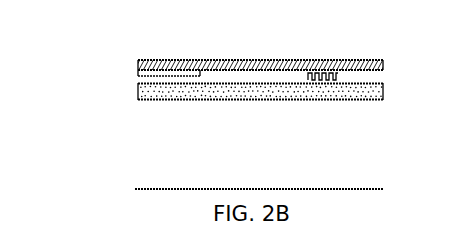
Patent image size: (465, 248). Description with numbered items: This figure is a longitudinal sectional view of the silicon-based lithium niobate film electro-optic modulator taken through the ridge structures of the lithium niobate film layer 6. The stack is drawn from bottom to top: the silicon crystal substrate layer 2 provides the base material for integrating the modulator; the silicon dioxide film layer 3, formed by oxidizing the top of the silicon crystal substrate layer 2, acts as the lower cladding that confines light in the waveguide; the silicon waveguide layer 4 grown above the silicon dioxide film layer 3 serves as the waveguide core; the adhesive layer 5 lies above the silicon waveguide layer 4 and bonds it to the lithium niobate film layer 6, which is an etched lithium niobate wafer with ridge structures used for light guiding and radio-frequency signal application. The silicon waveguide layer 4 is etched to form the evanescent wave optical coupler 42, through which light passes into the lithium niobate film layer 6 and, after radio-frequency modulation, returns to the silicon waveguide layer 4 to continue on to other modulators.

The silicon crystal substrate layer 2 is at (155, 143).
The silicon dioxide film layer 3 is at (135, 95).
The silicon waveguide layer 4 is at (135, 75).
The optical coupler 42 is at (322, 72).
The adhesive layer 5 is at (464, 115).
The lithium niobate film layer 6 is at (464, 58).